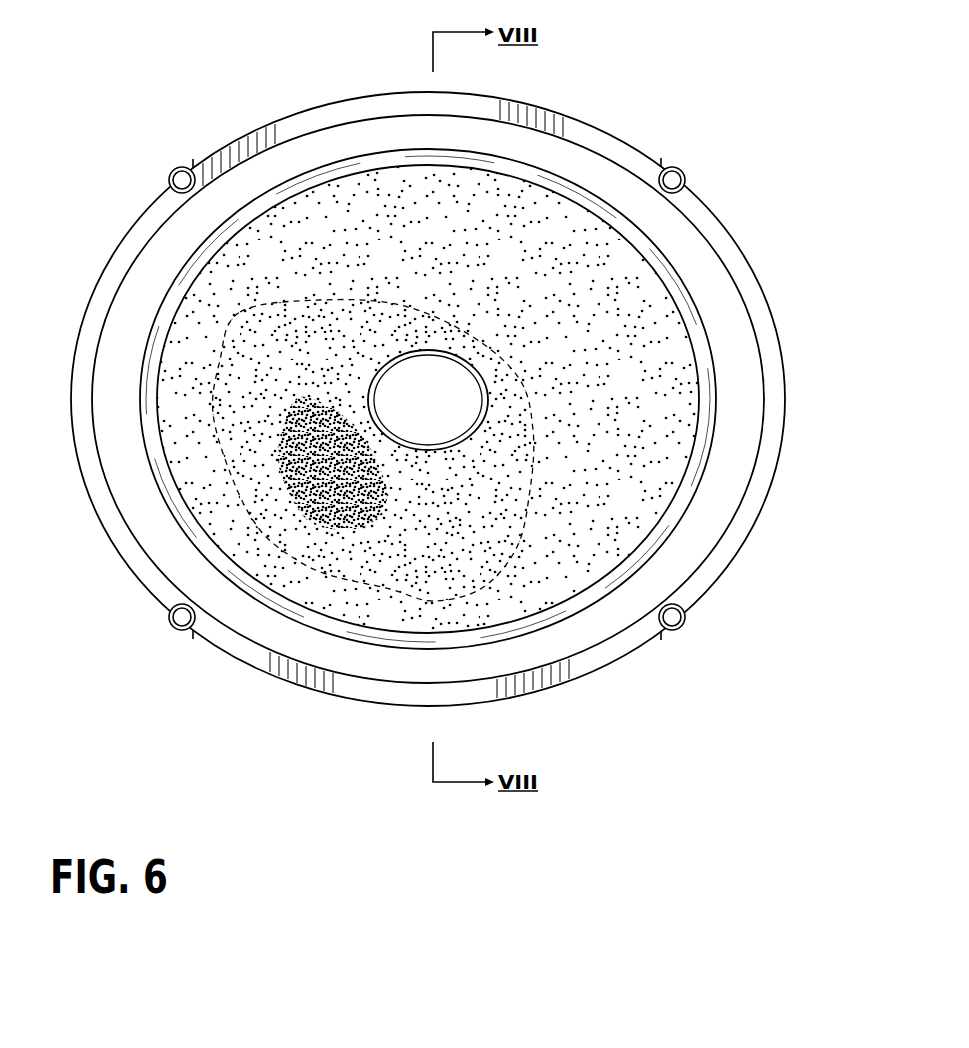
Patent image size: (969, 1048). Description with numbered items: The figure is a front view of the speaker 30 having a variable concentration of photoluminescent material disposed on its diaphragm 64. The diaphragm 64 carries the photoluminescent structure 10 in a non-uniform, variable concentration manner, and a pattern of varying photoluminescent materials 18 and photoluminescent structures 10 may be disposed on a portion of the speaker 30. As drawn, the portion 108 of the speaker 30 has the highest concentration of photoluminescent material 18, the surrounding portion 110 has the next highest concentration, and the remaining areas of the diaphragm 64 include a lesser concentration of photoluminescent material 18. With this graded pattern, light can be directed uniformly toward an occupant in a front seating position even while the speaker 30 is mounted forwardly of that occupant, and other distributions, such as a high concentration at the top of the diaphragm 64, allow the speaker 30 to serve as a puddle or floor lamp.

The speaker 30 is at (560, 86).
The photoluminescent structure 10 is at (528, 222).
The photoluminescent material 18 is at (593, 272).
The diaphragm 64 is at (597, 325).
The portion of the speaker 108 is at (307, 518).
The portion of the speaker 110 is at (383, 572).